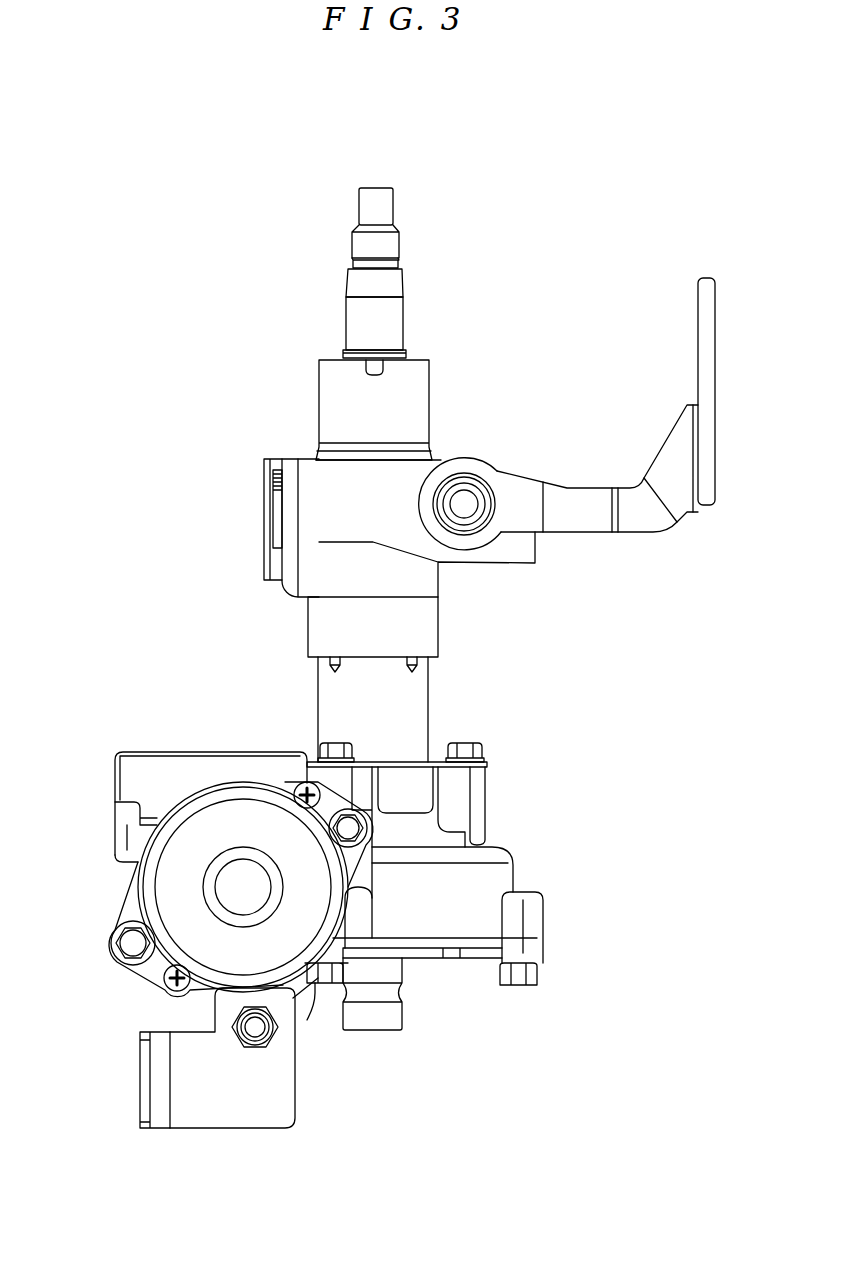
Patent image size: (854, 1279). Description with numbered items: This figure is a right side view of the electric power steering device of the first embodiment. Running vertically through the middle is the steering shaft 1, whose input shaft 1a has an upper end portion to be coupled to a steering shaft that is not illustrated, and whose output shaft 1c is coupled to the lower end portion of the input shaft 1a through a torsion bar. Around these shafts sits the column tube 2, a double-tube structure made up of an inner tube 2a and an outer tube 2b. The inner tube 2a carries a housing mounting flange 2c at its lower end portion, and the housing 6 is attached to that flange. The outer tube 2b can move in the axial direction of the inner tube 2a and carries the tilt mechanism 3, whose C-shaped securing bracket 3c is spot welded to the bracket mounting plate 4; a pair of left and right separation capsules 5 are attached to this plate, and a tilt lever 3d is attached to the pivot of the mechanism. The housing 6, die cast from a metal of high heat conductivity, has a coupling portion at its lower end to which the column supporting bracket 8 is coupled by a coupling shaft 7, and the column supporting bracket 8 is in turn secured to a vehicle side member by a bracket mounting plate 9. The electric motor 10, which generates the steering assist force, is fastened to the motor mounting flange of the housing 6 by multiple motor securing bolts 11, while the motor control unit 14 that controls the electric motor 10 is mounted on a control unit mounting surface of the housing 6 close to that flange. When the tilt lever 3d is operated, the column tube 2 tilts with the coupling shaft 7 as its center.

The steering shaft 1 is at (330, 273).
The input shaft 1a is at (355, 318).
The output shaft 1c is at (390, 1013).
The column tube 2 is at (218, 618).
The inner tube 2a is at (332, 687).
The outer tube 2b is at (322, 623).
The housing mounting flange 2c is at (488, 765).
The tilt mechanism 3 is at (480, 437).
The securing bracket 3c is at (363, 473).
The tilt lever 3d is at (705, 342).
The bracket mounting plate 4 is at (288, 463).
The separation capsules 5 is at (275, 512).
The housing 6 is at (495, 875).
The coupling shaft 7 is at (258, 1030).
The column supporting bracket 8 is at (220, 1113).
The bracket mounting plate 9 is at (143, 1103).
The electric motor 10 is at (172, 890).
The motor securing bolts 11 is at (128, 943).
The motor control unit 14 is at (137, 775).